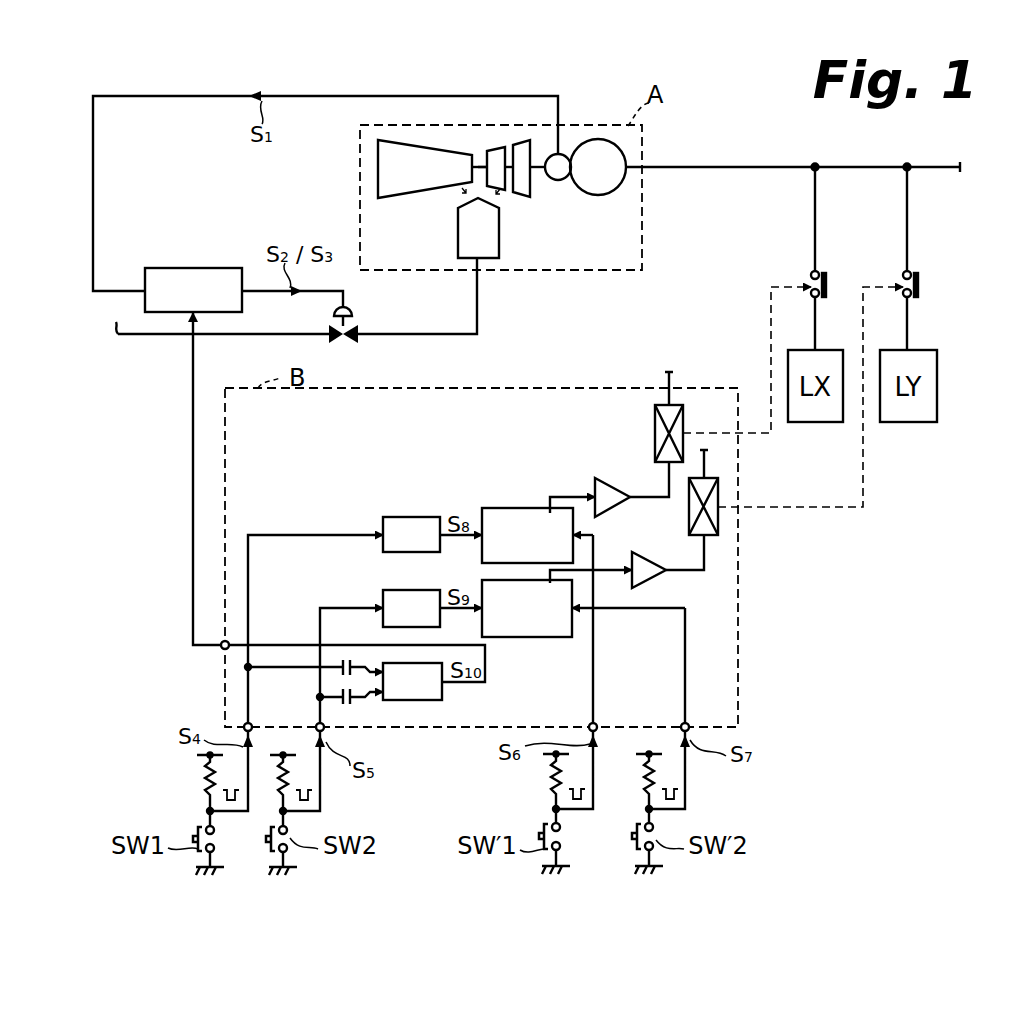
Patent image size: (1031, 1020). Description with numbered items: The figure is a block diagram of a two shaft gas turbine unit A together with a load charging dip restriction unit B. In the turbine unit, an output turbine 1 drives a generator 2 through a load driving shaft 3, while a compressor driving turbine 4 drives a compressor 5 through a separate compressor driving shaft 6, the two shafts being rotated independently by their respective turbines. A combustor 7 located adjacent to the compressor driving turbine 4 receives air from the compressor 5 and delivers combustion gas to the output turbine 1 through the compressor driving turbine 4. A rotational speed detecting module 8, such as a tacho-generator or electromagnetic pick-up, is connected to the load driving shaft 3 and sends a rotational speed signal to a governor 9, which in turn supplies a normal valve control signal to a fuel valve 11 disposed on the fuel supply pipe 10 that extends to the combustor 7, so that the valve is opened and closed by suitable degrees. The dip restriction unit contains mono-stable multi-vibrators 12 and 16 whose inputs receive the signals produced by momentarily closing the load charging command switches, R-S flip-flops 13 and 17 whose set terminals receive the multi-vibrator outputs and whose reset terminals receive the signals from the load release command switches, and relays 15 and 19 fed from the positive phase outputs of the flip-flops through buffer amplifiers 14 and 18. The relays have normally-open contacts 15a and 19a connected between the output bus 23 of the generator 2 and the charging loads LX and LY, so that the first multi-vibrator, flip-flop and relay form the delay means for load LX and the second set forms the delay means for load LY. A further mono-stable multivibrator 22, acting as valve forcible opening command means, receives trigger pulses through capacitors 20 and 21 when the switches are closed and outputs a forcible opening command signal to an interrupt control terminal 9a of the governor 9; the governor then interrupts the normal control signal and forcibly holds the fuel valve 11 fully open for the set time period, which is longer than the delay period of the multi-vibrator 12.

The output turbine 1 is at (521, 197).
The generator 2 is at (598, 196).
The load driving shaft 3 is at (538, 172).
The compressor driving turbine 4 is at (493, 158).
The compressor 5 is at (403, 180).
The compressor driving shaft 6 is at (487, 157).
The combustor 7 is at (470, 246).
The rotational speed detecting module 8 is at (559, 180).
The governor 9 is at (185, 303).
The interrupt control terminal 9a is at (222, 328).
The fuel supply pipe 10 is at (436, 335).
The fuel valve 11 is at (358, 328).
The mono-stable multi-vibrator 12 is at (410, 517).
The R-S flip-flop 13 is at (517, 508).
The buffer amplifier 14 is at (612, 477).
The relay 15 is at (684, 428).
The normally-open contact 15a is at (830, 280).
The mono-stable multi-vibrator 16 is at (395, 590).
The R-S flip-flop 17 is at (533, 638).
The buffer amplifier 18 is at (650, 553).
The relay 19 is at (719, 490).
The normally-open contact 19a is at (922, 280).
The capacitor 20 is at (343, 660).
The capacitor 21 is at (343, 702).
The mono-stable multivibrator 22 is at (433, 702).
The output bus 23 is at (721, 166).